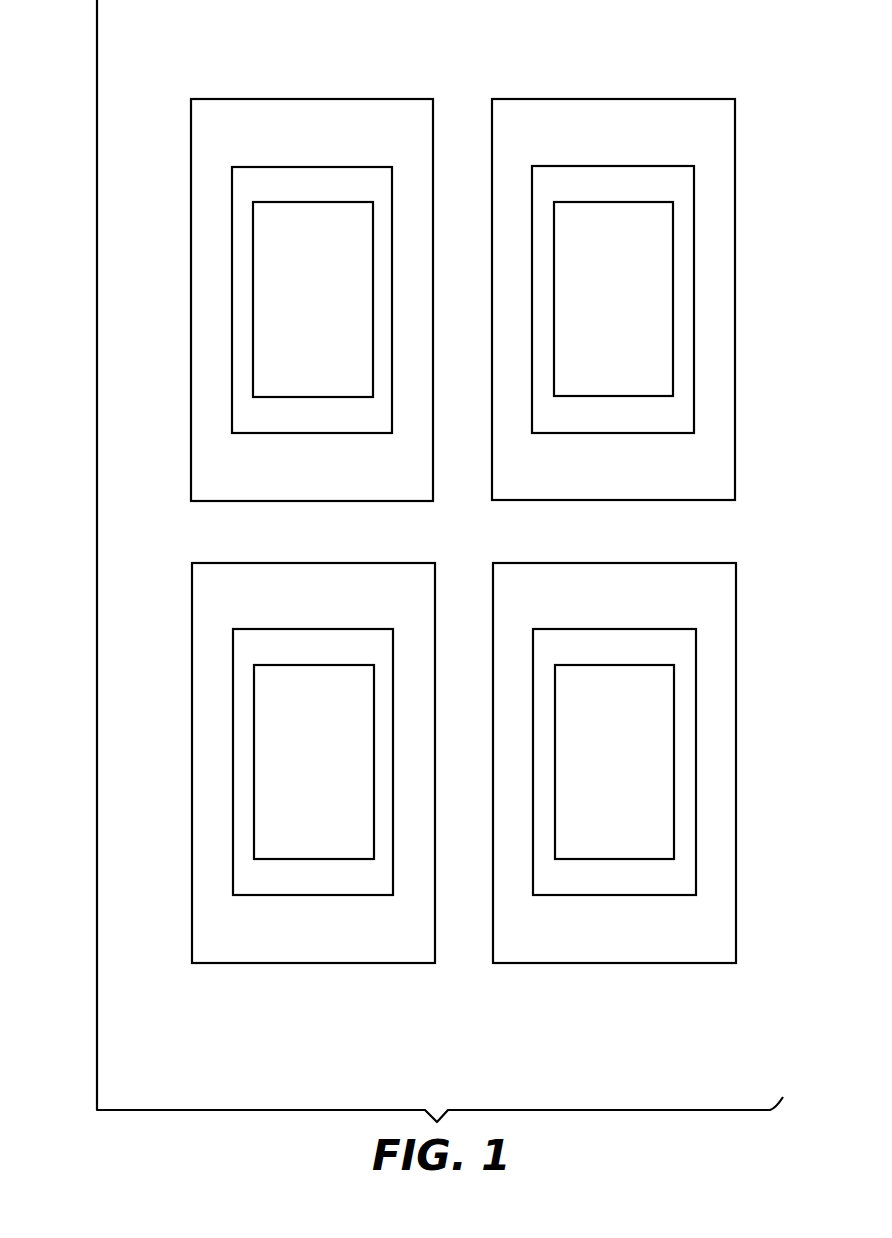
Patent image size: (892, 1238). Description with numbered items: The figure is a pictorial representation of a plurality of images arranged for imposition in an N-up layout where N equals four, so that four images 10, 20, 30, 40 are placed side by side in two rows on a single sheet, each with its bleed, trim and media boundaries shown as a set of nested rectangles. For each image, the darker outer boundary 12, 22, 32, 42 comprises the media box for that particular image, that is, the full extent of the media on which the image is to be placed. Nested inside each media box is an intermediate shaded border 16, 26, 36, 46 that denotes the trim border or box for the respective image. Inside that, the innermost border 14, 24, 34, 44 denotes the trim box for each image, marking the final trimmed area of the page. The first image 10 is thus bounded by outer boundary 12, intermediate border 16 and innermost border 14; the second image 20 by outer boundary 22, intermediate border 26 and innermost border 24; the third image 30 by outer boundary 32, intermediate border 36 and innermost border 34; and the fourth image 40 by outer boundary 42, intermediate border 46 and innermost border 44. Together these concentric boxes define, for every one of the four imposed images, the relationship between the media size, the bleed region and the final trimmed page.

The image 10 is at (292, 251).
The outer boundary 12 is at (410, 99).
The innermost border 14 is at (293, 202).
The intermediate shaded border 16 is at (237, 167).
The image 20 is at (607, 251).
The outer boundary 22 is at (715, 99).
The innermost border 24 is at (592, 202).
The intermediate shaded border 26 is at (565, 166).
The image 30 is at (614, 803).
The outer boundary 32 is at (690, 963).
The innermost border 34 is at (628, 859).
The intermediate shaded border 36 is at (661, 895).
The image 40 is at (312, 808).
The outer boundary 42 is at (386, 963).
The innermost border 44 is at (322, 859).
The intermediate shaded border 46 is at (355, 895).